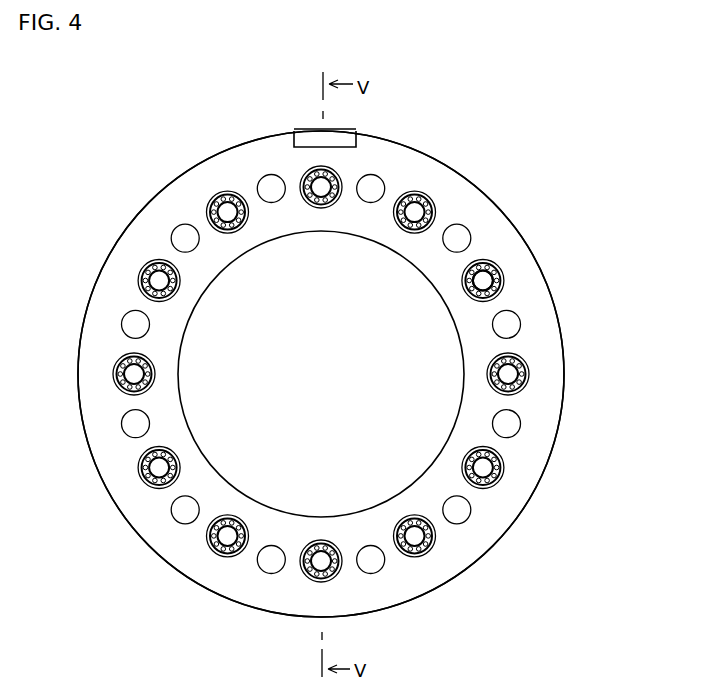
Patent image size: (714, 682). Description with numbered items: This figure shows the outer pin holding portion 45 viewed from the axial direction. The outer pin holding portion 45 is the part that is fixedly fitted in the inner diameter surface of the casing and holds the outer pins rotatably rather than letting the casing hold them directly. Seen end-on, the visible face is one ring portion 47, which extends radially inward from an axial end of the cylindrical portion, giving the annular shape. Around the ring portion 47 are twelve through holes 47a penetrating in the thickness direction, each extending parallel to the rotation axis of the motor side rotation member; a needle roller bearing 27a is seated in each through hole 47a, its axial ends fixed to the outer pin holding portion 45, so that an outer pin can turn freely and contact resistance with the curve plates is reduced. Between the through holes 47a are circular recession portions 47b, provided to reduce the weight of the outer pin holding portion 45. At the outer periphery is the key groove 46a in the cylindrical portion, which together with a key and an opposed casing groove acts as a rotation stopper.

The outer pin holding portion 45 is at (477, 148).
The key groove 46a is at (312, 138).
The ring portion 47 is at (528, 456).
The through hole 47a is at (483, 279).
The recession portion 47b is at (508, 325).
The needle roller bearing 27a is at (490, 262).